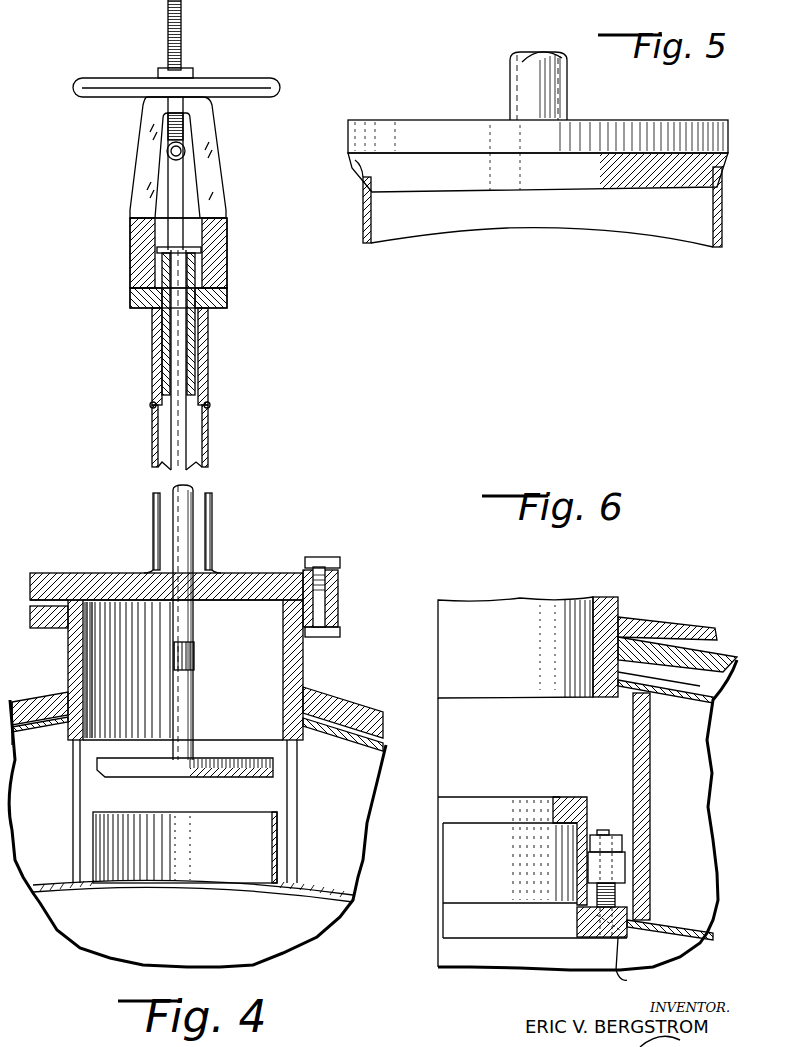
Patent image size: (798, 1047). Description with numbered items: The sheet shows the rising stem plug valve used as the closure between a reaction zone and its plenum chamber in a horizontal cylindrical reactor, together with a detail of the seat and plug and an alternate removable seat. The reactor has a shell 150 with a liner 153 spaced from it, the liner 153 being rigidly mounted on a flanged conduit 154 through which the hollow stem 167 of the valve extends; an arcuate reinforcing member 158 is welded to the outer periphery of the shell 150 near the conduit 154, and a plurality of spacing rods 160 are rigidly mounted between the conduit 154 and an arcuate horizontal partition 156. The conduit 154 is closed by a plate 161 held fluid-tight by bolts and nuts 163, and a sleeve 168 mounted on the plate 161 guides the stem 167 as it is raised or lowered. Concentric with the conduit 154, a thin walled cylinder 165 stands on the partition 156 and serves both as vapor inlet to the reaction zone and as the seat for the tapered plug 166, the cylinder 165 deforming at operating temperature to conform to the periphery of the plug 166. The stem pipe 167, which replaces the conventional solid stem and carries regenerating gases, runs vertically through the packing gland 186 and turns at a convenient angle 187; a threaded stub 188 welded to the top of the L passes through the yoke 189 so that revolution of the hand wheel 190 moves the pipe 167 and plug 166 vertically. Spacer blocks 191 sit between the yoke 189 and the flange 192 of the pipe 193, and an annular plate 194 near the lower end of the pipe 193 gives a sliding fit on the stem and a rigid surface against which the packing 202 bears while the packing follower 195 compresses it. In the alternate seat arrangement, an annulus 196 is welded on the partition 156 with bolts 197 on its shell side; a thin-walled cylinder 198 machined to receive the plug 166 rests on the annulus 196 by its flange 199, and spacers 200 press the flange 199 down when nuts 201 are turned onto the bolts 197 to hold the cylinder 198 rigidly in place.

In FIG. 4, the shell 150 is at (388, 736).
In FIG. 6, the shell 150 is at (735, 668).
In FIG. 4, the liner 153 is at (372, 762).
In FIG. 6, the liner 153 is at (720, 715).
In FIG. 4, the conduit 154 is at (304, 665).
In FIG. 6, the conduit 154 is at (612, 597).
In FIG. 6, the arcuate horizontal partition 156 is at (713, 928).
In FIG. 4, the arcuate reinforcing member 158 is at (348, 700).
In FIG. 6, the arcuate reinforcing member 158 is at (686, 625).
In FIG. 4, the spacing rod 160 is at (78, 820).
In FIG. 6, the spacing rod 160 is at (651, 756).
In FIG. 4, the plate 161 is at (274, 573).
In FIG. 4, the bolts and associated nuts 163 is at (323, 558).
In FIG. 4, the thin walled cylinder 165 is at (265, 820).
In FIG. 5, the thin walled cylinder 165 is at (721, 196).
In FIG. 4, the plug 166 is at (274, 773).
In FIG. 5, the plug 166 is at (722, 122).
In FIG. 4, the hollow stem 167 is at (195, 528).
In FIG. 5, the hollow stem 167 is at (560, 82).
In FIG. 4, the sleeve 168 is at (212, 497).
In FIG. 4, the packing gland 186 is at (208, 335).
In FIG. 4, the angle 187 is at (187, 162).
In FIG. 4, the threaded stub 188 is at (172, 46).
In FIG. 4, the yoke 189 is at (140, 168).
In FIG. 4, the hand wheel 190 is at (270, 78).
In FIG. 4, the spacer block 191 is at (226, 246).
In FIG. 4, the flange 192 is at (228, 300).
In FIG. 4, the pipe 193 is at (210, 418).
In FIG. 4, the annular plate 194 is at (152, 405).
In FIG. 4, the packing follower 195 is at (160, 270).
In FIG. 6, the annulus 196 is at (632, 954).
In FIG. 6, the bolt 197 is at (603, 830).
In FIG. 6, the thin-walled cylinder 198 is at (587, 792).
In FIG. 6, the flange 199 is at (580, 937).
In FIG. 6, the spacer 200 is at (626, 866).
In FIG. 6, the nut 201 is at (624, 840).
In FIG. 4, the packing 202 is at (164, 350).